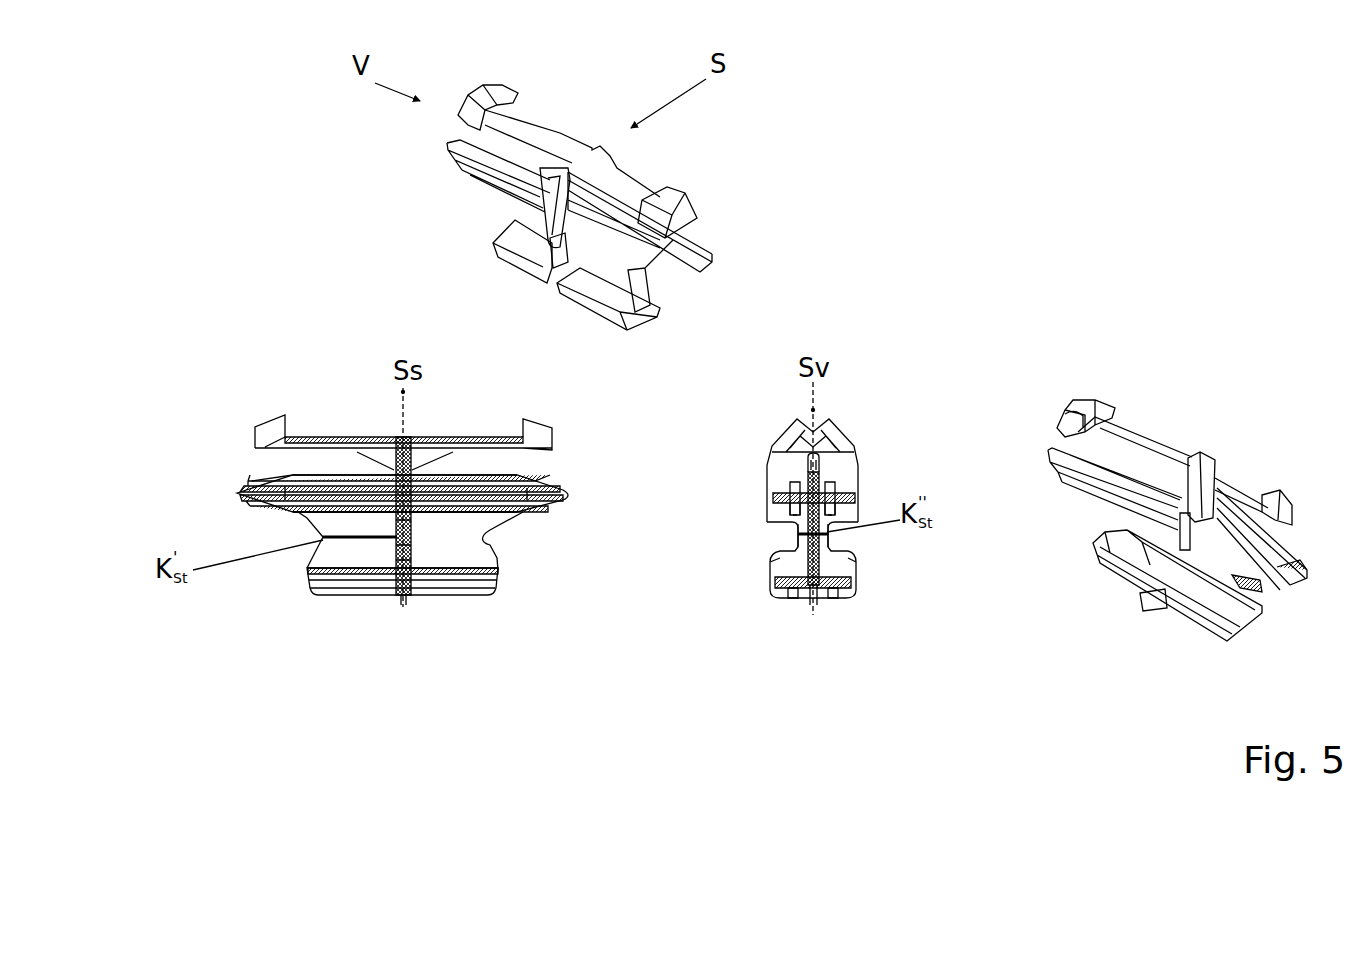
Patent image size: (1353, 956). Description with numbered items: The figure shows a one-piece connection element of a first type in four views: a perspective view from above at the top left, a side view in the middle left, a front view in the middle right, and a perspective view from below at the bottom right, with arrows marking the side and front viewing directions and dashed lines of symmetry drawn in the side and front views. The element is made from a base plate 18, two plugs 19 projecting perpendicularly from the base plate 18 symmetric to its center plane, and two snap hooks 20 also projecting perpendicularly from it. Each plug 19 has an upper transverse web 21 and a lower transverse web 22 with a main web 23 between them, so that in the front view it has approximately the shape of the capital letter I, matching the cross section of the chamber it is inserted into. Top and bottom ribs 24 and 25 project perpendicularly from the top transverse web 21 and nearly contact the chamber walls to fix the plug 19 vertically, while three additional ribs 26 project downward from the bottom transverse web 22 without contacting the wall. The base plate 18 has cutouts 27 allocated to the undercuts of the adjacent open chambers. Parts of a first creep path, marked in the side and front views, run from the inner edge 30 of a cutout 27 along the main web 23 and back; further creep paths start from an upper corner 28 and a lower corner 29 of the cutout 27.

The base plate 18 is at (407, 590).
The plug 19 is at (312, 520).
The snap hook 20 is at (318, 443).
The upper transverse web 21 is at (247, 492).
The lower transverse web 22 is at (325, 573).
The main web 23 is at (357, 555).
The top rib 24 is at (292, 482).
The bottom rib 25 is at (835, 513).
The additional rib 26 is at (358, 587).
The cutout 27 is at (790, 536).
The upper corner 28 is at (773, 525).
The lower corner 29 is at (775, 567).
The inner edge 30 is at (413, 542).